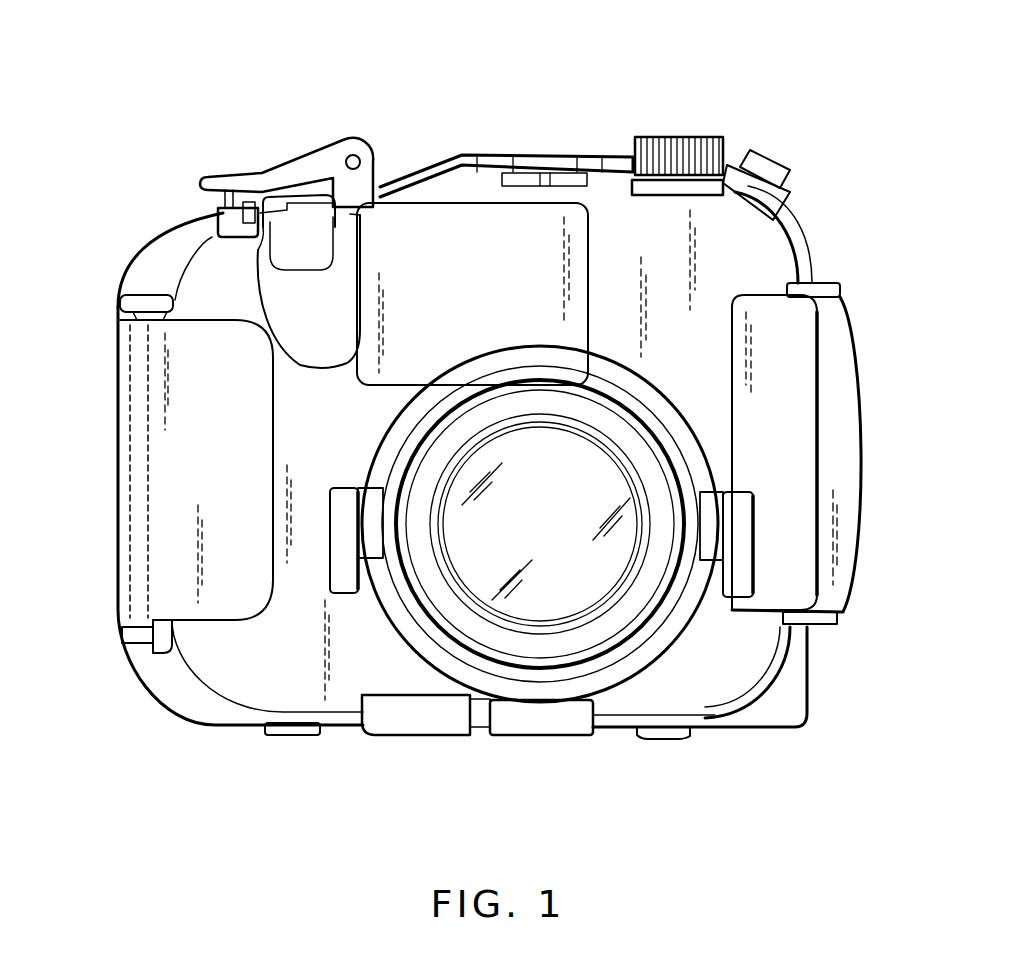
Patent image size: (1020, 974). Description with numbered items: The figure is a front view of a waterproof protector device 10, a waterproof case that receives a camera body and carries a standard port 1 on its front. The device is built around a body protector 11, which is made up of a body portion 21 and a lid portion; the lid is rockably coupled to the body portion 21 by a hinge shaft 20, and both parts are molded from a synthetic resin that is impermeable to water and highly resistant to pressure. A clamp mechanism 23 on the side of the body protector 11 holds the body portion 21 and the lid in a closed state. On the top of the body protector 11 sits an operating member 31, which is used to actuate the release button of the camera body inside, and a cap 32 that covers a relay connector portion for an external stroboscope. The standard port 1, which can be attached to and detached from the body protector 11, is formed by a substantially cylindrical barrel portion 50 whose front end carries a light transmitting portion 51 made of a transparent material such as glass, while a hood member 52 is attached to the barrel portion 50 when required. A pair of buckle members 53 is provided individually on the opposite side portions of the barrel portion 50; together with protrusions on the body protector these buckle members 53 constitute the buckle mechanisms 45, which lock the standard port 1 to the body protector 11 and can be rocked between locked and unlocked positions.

The waterproof protector device 10 is at (539, 80).
The body protector 11 is at (181, 695).
The body portion 21 is at (234, 678).
The hinge shaft 20 is at (140, 474).
The clamp mechanism 23 is at (862, 411).
The operating member 31 is at (240, 177).
The cap 32 is at (678, 137).
The buckle mechanism 45 is at (335, 473).
The buckle member 53 is at (330, 545).
The standard port 1 is at (417, 668).
The barrel portion 50 is at (648, 645).
The light transmitting portion 51 is at (540, 594).
The hood member 52 is at (468, 633).